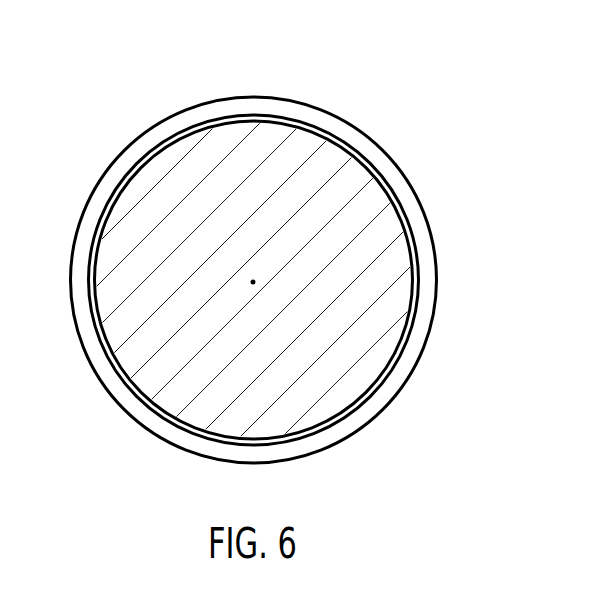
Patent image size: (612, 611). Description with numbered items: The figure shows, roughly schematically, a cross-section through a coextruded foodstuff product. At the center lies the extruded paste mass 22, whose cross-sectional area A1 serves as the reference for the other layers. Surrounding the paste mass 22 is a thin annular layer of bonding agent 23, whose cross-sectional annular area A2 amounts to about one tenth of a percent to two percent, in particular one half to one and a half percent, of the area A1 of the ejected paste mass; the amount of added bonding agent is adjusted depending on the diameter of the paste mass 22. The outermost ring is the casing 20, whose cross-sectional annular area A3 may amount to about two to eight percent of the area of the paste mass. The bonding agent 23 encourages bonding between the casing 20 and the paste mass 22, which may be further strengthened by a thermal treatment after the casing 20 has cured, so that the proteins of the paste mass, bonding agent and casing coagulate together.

The casing 20 is at (383, 393).
The paste mass 22 is at (332, 372).
The bonding agent 23 is at (411, 295).
The cross-sectional area of the ejected paste mass A1 is at (242, 265).
The cross-sectional annular area of the bonding agent A2 is at (384, 186).
The cross-sectional annular area of the casing A3 is at (376, 155).